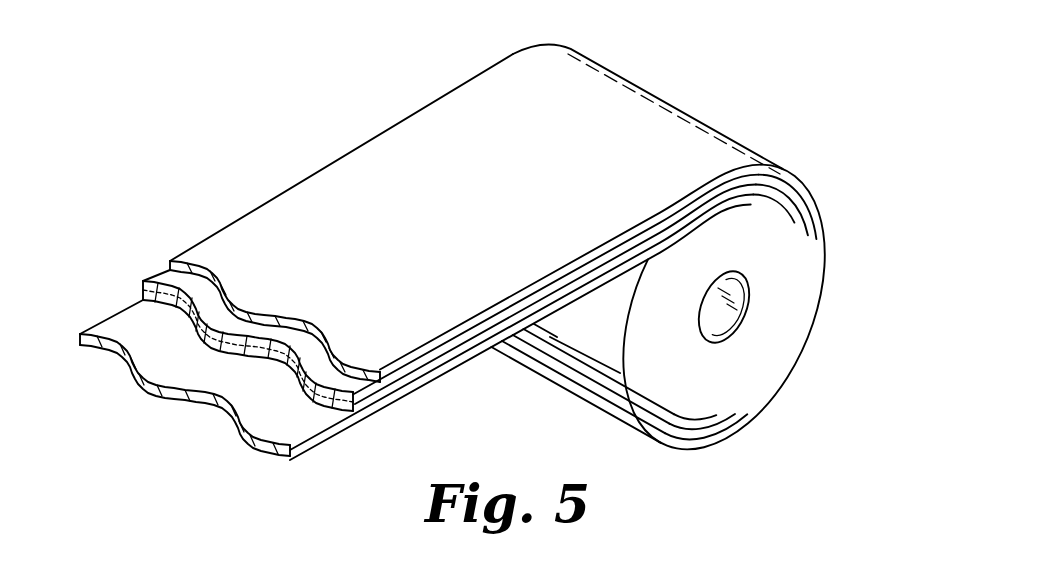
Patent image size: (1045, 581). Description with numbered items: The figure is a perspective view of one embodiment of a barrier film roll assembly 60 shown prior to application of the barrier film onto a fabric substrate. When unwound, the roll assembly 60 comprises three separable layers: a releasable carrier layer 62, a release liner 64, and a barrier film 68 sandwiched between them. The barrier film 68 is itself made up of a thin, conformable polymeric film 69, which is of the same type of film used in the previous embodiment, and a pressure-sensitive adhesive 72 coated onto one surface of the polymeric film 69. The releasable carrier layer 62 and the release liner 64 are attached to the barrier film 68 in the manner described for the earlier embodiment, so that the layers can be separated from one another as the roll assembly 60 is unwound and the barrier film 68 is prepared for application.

The barrier film roll assembly 60 is at (704, 42).
The releasable carrier layer 62 is at (257, 227).
The release liner 64 is at (112, 328).
The barrier film 68 is at (156, 258).
The thin, conformable polymeric film 69 is at (340, 402).
The adhesive 72 is at (147, 298).